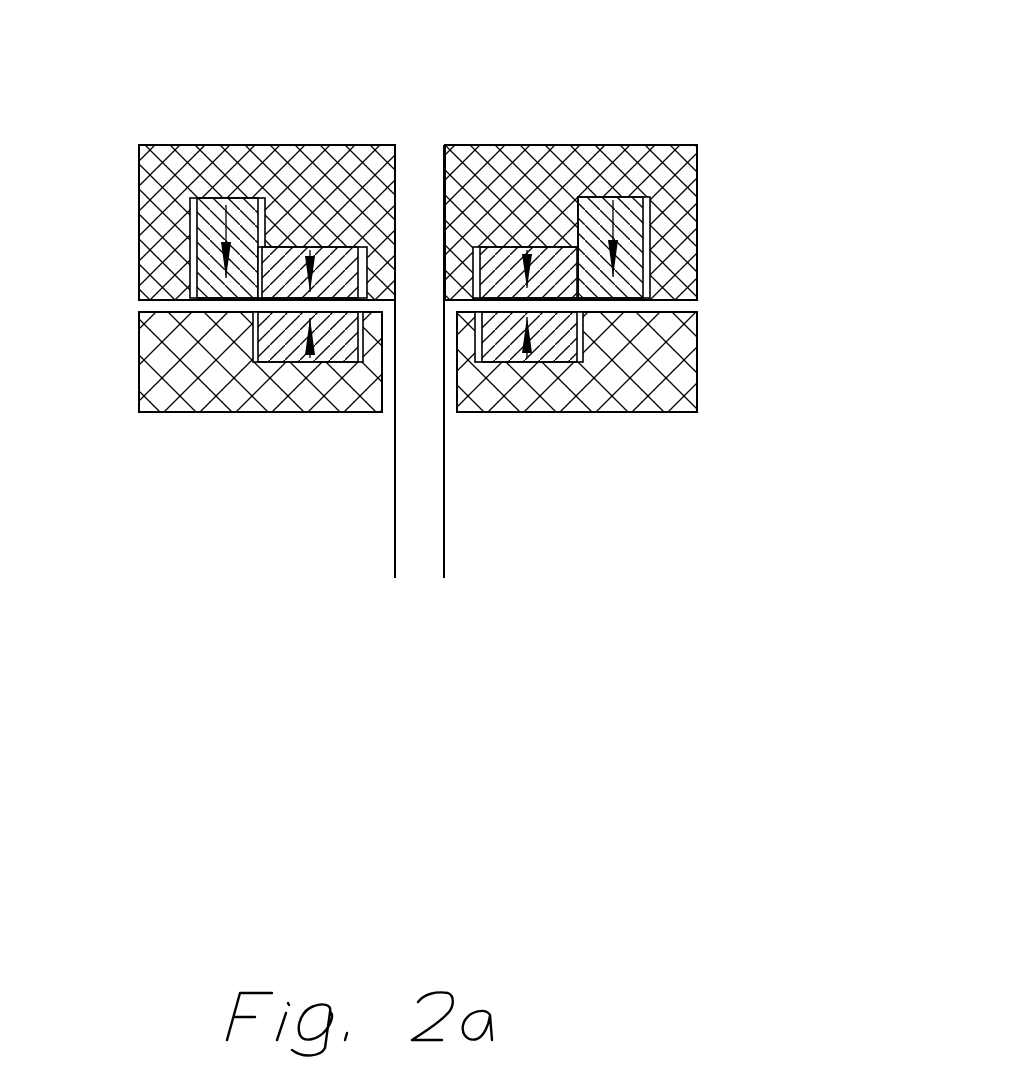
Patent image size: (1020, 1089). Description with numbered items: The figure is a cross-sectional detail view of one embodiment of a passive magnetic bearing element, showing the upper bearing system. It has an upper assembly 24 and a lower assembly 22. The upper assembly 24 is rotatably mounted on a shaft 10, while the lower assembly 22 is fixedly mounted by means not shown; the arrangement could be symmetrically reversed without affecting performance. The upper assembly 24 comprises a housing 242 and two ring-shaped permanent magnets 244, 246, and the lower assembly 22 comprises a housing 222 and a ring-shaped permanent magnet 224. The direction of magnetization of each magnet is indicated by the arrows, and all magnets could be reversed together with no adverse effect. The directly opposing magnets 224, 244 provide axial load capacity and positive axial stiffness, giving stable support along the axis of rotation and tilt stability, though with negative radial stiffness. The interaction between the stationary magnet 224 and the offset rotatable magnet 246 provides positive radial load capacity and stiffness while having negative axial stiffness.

The shaft 10 is at (444, 474).
The lower assembly 22 is at (451, 421).
The upper assembly 24 is at (480, 153).
The housing 222 is at (150, 412).
The ring-shaped permanent magnet 224 is at (295, 348).
The housing 242 is at (513, 152).
The ring-shaped permanent magnet 244 is at (296, 272).
The ring-shaped permanent magnet 246 is at (215, 217).